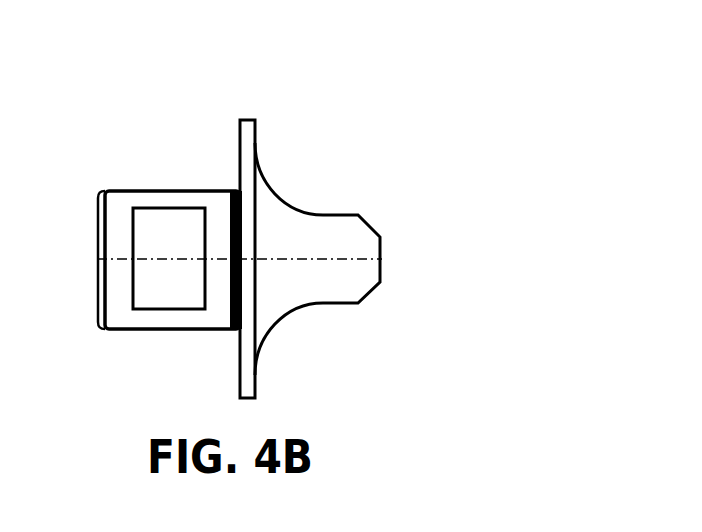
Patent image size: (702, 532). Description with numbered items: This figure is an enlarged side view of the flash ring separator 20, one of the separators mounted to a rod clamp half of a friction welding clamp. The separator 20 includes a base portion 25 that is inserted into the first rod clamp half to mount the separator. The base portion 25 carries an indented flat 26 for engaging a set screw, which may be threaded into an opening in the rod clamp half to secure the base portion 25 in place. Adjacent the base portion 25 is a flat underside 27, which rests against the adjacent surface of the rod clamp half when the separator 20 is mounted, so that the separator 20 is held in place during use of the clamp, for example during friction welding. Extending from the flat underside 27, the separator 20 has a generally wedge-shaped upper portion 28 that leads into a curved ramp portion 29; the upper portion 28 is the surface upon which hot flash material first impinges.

The flash ring separator 20 is at (472, 214).
The base portion 25 is at (117, 190).
The indented flat 26 is at (185, 225).
The flat underside 27 is at (240, 153).
The upper portion 28 is at (355, 237).
The curved ramp portion 29 is at (283, 192).